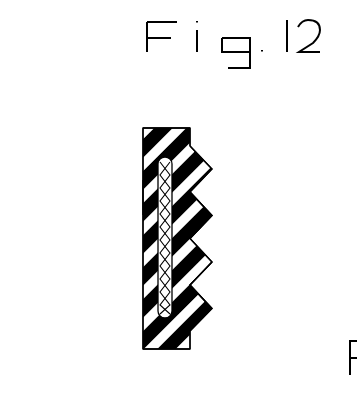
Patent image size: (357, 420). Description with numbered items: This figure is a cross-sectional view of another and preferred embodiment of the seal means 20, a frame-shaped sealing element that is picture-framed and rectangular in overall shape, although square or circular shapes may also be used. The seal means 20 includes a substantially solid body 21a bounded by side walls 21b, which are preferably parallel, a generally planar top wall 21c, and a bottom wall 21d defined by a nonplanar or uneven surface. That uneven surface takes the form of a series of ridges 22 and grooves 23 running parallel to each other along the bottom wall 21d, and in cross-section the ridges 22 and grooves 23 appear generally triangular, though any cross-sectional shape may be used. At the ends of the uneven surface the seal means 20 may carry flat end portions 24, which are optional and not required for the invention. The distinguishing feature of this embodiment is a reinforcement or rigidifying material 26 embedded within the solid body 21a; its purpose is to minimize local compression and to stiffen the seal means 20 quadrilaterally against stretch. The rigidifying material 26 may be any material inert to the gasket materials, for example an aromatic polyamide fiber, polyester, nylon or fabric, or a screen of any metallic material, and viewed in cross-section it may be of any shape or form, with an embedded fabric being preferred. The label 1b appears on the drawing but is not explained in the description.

The sealing strip 20 is at (131, 119).
The top surface of strip 1b is at (167, 128).
The shoulder 24 is at (191, 134).
The inner wall of slot 21a is at (155, 206).
The back face of strip 21c is at (150, 237).
The serrated front face 21d is at (253, 256).
The serration tooth 22 is at (213, 215).
The serration groove 23 is at (193, 286).
The spring 26 is at (162, 262).
The bottom surface of strip 21b is at (167, 350).